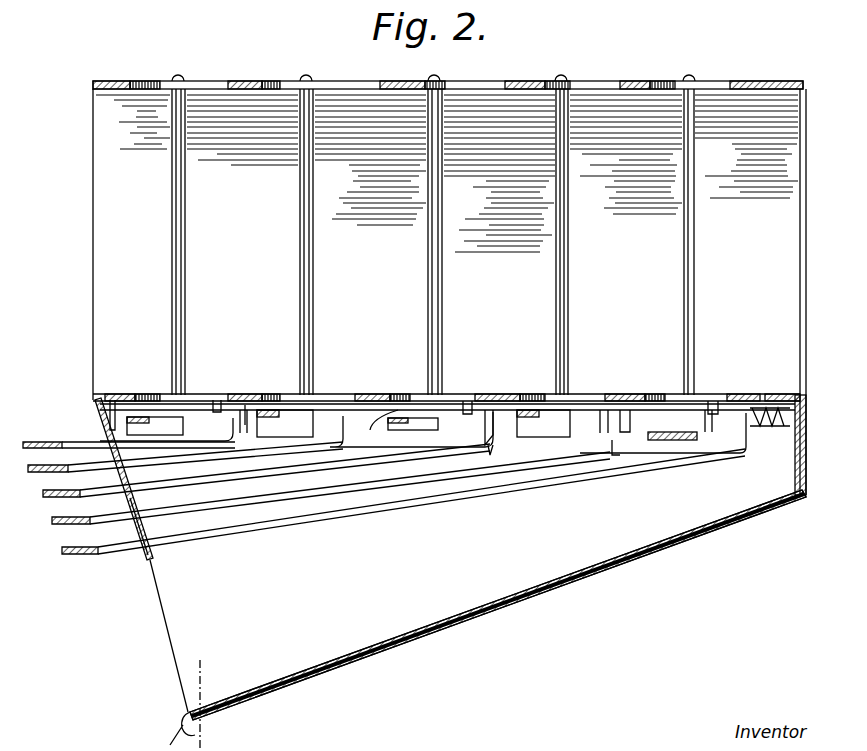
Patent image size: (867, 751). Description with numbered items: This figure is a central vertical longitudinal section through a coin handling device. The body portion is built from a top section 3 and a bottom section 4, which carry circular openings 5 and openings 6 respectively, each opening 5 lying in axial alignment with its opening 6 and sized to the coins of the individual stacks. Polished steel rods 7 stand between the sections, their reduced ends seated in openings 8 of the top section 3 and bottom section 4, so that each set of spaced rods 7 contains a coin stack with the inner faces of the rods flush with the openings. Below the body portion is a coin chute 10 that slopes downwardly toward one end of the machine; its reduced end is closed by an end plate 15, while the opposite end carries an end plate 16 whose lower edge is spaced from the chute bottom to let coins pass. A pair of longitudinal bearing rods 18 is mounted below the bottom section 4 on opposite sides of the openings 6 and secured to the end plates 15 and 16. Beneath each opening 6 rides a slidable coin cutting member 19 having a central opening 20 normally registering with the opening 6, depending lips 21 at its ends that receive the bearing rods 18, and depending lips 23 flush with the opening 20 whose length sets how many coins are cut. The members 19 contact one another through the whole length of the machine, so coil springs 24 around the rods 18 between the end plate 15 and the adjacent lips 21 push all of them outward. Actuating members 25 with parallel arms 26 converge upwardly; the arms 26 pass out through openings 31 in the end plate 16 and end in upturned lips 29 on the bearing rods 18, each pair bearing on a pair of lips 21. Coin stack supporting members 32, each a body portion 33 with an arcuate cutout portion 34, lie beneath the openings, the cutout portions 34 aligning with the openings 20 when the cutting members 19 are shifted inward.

The top section 3 is at (245, 80).
The bottom section 4 is at (183, 68).
The openings 5 is at (203, 80).
The openings 6 is at (200, 394).
The rods 7 is at (170, 158).
The openings 8 is at (68, 392).
The coin chute 10 is at (492, 596).
The end plate 15 is at (796, 478).
The end plate 16 is at (142, 562).
The bearing rods 18 is at (675, 408).
The slidable coin cutting member 19 is at (112, 400).
The openings 20 is at (217, 400).
The depending lips 21 is at (762, 445).
The depending lips 23 is at (716, 455).
The coil springs 24 is at (780, 396).
The actuating members 25 is at (396, 511).
The parallel arms 26 is at (232, 520).
The upturned lips 29 is at (615, 445).
The openings 31 is at (145, 530).
The coin stack supporting members 32 is at (160, 425).
The body portion 33 is at (530, 410).
The cutout portion 34 is at (365, 380).